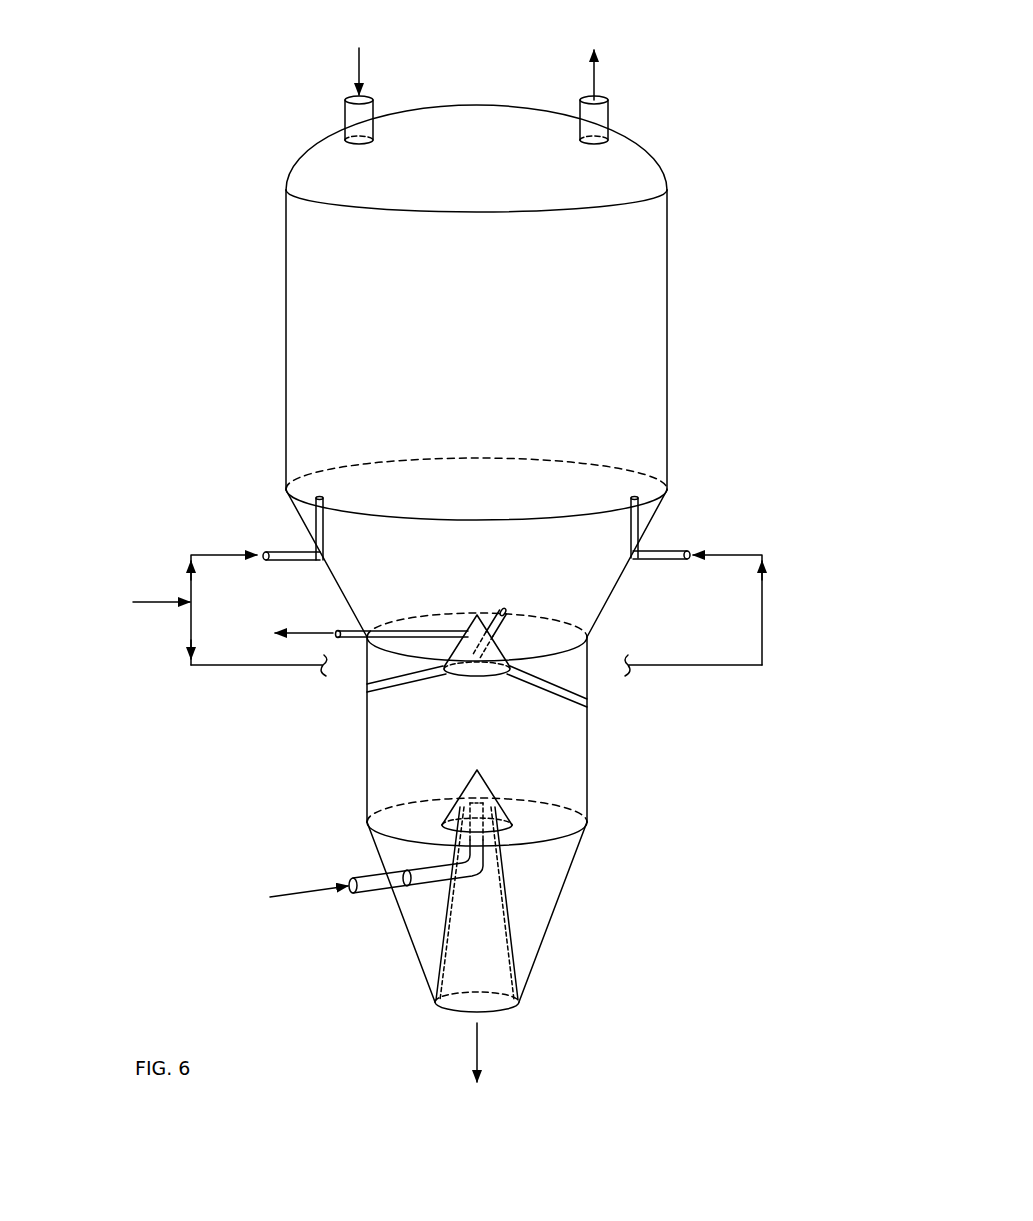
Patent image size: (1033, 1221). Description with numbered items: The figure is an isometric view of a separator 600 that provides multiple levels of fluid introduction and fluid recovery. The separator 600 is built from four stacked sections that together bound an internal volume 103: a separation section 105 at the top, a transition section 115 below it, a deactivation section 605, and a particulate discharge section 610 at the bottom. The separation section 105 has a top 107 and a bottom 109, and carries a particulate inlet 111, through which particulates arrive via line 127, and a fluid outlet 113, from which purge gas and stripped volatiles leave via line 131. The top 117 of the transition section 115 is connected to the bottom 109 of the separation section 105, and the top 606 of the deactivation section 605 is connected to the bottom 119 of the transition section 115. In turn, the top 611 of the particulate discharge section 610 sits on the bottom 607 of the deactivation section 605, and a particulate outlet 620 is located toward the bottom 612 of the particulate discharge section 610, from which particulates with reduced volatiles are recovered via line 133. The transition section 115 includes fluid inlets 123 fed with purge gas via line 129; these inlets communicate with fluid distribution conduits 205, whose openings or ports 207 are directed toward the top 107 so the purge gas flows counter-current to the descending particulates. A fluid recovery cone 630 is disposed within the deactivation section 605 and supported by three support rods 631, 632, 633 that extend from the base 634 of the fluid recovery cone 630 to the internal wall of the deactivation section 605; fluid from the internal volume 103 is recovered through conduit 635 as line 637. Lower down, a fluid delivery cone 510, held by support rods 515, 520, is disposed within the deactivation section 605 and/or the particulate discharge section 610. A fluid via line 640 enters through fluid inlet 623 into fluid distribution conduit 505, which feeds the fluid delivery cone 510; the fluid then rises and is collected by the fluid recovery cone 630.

The separator 600 is at (257, 50).
The top of the separation section 107 is at (521, 106).
The separation section 105 is at (668, 320).
The internal volume 103 is at (438, 290).
The particulate inlet 111 is at (346, 117).
The particulate line 127 is at (361, 64).
The fluid outlet 113 is at (610, 117).
The recovered purge gas line 131 is at (597, 79).
The bottom of the separation section 109 is at (556, 458).
The top of the transition section 117 is at (652, 508).
The openings or ports 207 is at (319, 495).
The fluid distribution conduit 205 is at (323, 522).
The fluid inlet 123 is at (284, 552).
The transition section 115 is at (646, 535).
The purge gas line 129 is at (145, 598).
The bottom of the transition section 119 is at (584, 632).
The deactivation section 605 is at (367, 735).
The top of the deactivation section 606 is at (550, 662).
The recovery conduit 635 is at (346, 630).
The recovered fluid line 637 is at (320, 634).
The fluid recovery cone 630 is at (503, 650).
The base of the fluid recovery cone 634 is at (472, 682).
The support rod 632 is at (490, 612).
The support rod 631 is at (410, 683).
The support rod 633 is at (537, 692).
The bottom of the deactivation section 607 is at (588, 826).
The fluid delivery cone 510 is at (483, 780).
The top of the particulate discharge section 611 is at (552, 844).
The particulate discharge section 610 is at (549, 921).
The bottom of the particulate discharge section 612 is at (508, 1009).
The support rod 515 is at (437, 970).
The support rod 520 is at (517, 969).
The particulate outlet 620 is at (447, 1017).
The particulate recovery line 133 is at (479, 1047).
The fluid distribution conduit 505 is at (430, 883).
The fluid inlet 623 is at (380, 870).
The fluid line 640 is at (308, 867).